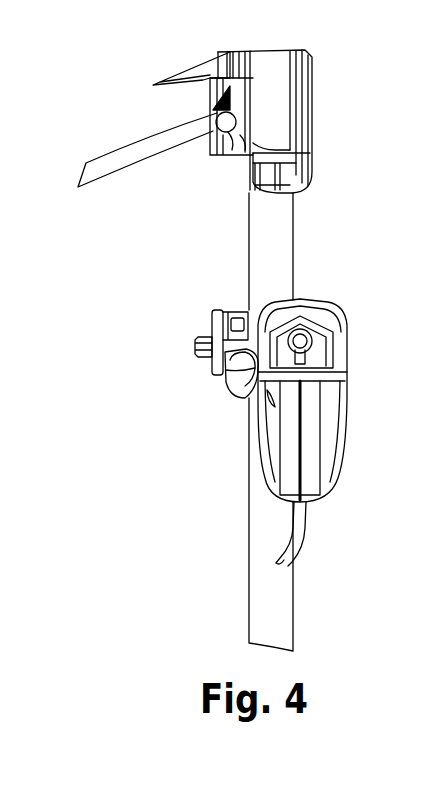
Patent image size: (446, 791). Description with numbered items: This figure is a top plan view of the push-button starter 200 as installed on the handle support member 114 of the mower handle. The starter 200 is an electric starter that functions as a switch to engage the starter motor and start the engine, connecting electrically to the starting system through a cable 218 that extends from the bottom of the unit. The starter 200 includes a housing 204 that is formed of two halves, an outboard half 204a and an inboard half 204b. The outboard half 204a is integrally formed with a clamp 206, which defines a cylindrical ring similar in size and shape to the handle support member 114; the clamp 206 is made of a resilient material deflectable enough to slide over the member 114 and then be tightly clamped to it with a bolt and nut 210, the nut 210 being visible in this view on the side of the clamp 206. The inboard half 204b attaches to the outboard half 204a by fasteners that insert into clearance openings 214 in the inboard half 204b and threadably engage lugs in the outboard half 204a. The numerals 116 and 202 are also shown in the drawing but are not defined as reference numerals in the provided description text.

The handle support member 114 is at (278, 240).
The head assembly 116 is at (324, 62).
The push-button starter 200 is at (355, 325).
The control face / button panel 202 is at (318, 332).
The housing 204 is at (336, 470).
The outboard half 204a is at (345, 376).
The inboard half 204b is at (272, 494).
The clamp 206 is at (229, 310).
The nut 210 is at (206, 358).
The clearance openings 214 is at (268, 468).
The cable 218 is at (303, 528).